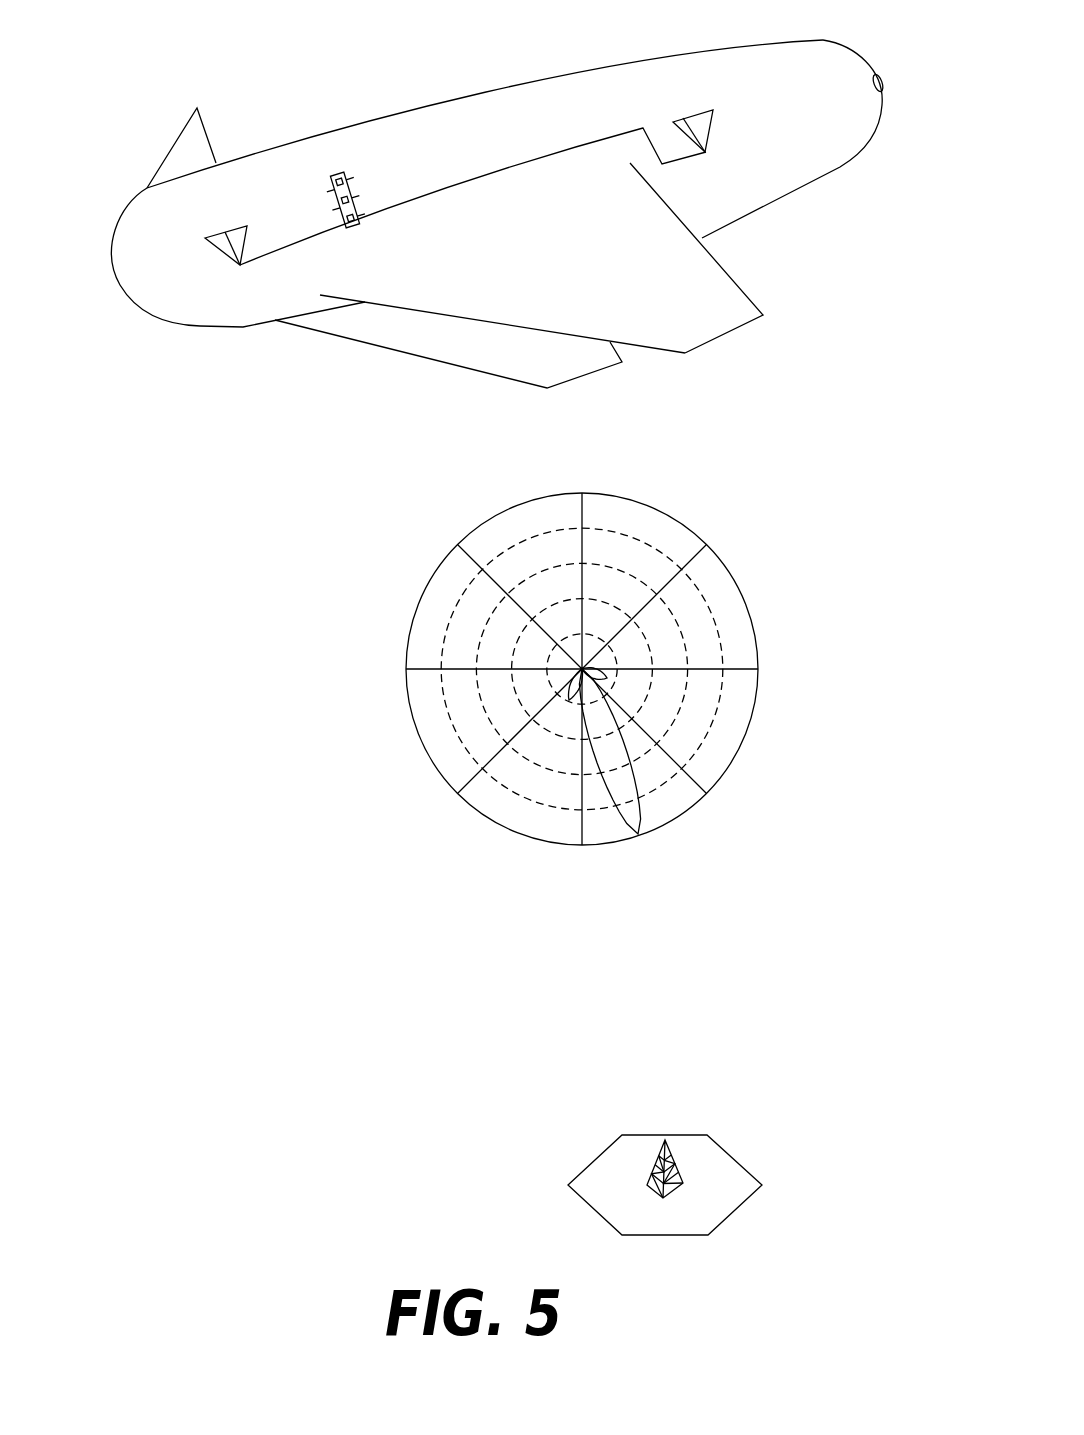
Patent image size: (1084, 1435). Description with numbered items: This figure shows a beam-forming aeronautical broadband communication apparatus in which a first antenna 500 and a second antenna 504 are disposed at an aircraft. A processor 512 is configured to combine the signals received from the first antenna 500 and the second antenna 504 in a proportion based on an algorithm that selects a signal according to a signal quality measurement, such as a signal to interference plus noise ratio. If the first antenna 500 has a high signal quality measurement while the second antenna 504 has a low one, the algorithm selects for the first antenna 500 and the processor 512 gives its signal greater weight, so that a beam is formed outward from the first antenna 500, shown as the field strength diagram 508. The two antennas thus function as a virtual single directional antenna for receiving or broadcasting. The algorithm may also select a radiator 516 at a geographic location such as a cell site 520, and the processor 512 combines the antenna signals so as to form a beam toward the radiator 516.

The first antenna 500 is at (243, 226).
The second antenna 504 is at (678, 120).
The field strength diagram 508 is at (693, 530).
The processor 512 is at (331, 173).
The radiator 516 is at (671, 1150).
The cell site 520 is at (737, 1207).